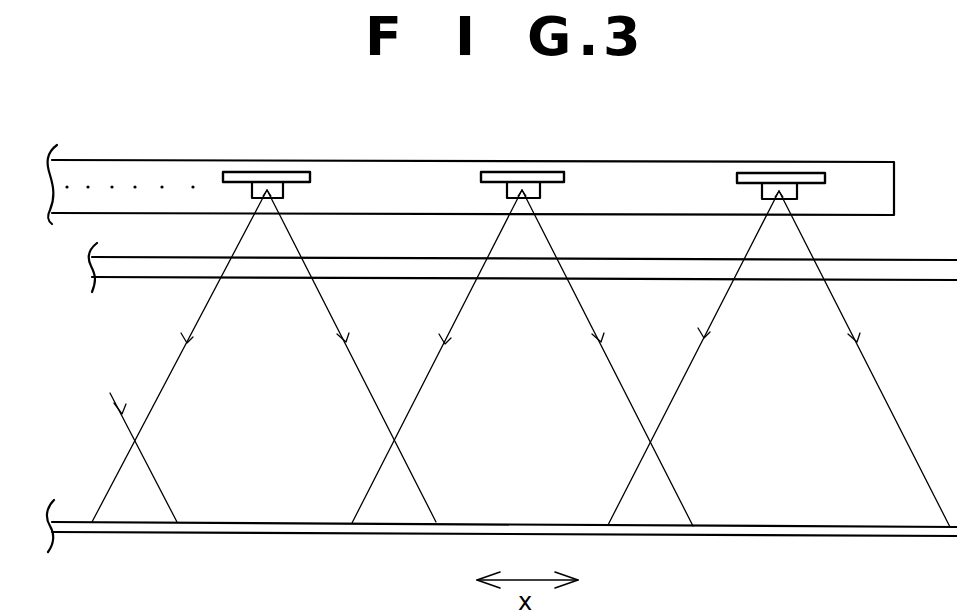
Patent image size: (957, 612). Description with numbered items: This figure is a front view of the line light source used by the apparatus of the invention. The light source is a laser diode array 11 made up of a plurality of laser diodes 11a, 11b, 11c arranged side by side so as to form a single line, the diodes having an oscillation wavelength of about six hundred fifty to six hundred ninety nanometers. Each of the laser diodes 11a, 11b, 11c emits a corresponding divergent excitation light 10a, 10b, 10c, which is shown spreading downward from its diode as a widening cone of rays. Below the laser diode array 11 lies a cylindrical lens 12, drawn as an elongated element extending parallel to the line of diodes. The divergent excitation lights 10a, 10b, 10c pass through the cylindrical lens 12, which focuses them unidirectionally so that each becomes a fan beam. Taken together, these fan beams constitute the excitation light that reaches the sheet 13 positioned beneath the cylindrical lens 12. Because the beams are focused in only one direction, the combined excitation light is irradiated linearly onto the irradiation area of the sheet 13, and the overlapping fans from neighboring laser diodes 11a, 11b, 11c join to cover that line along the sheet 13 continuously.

The laser diode array 11 is at (636, 158).
The laser diode 11a is at (785, 161).
The laser diode 11b is at (515, 160).
The laser diode 11c is at (262, 160).
The cylindrical lens 12 is at (917, 260).
The sheet 13 is at (803, 522).
The divergent excitation light 10a is at (669, 412).
The divergent excitation light 10b is at (407, 417).
The divergent excitation light 10c is at (152, 405).